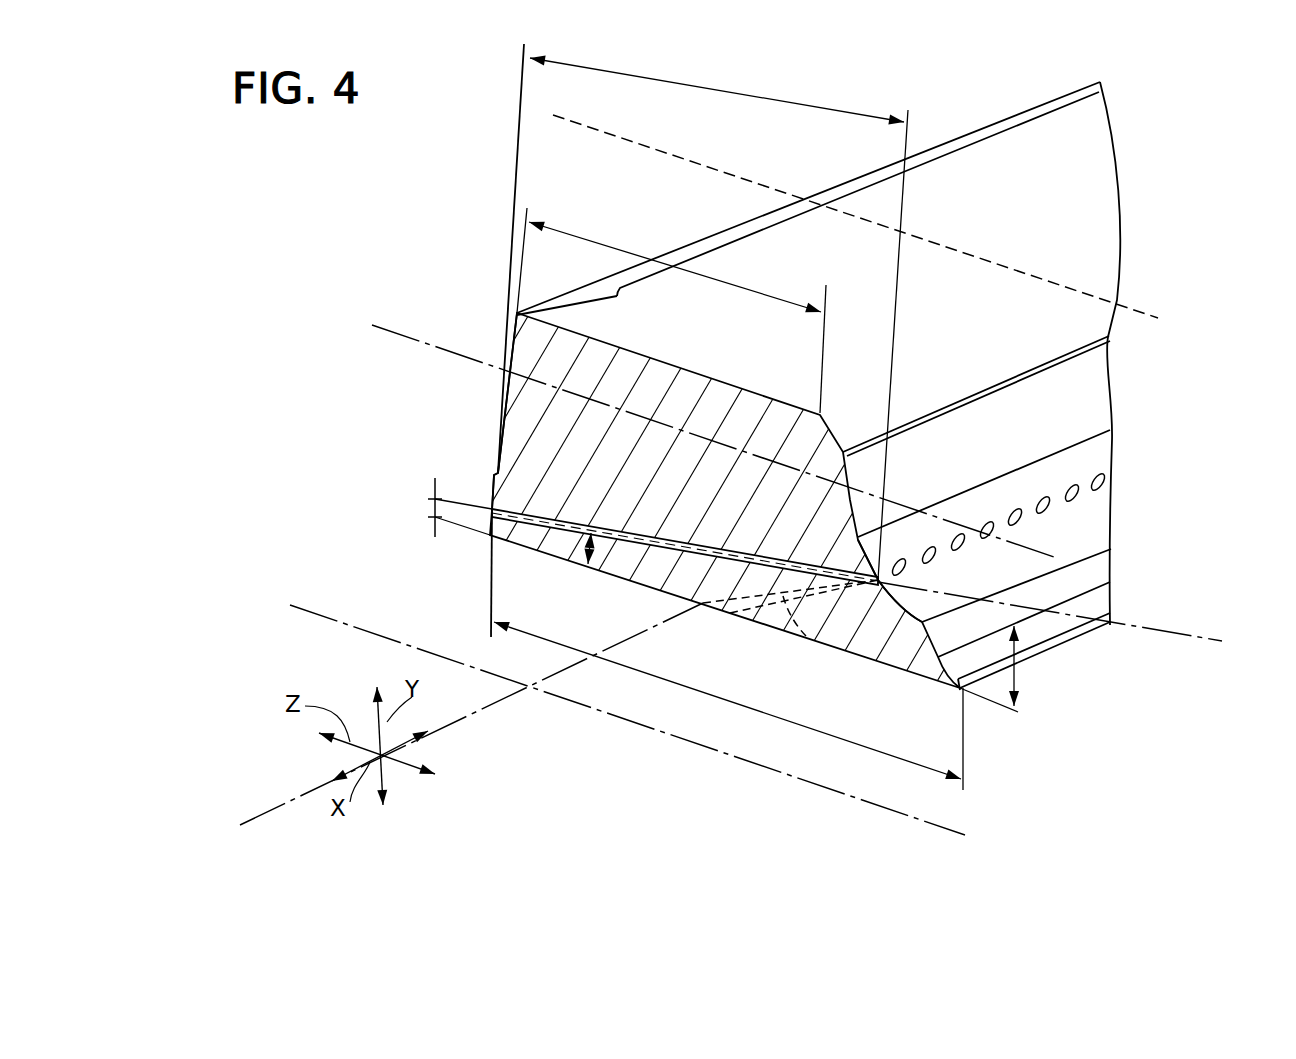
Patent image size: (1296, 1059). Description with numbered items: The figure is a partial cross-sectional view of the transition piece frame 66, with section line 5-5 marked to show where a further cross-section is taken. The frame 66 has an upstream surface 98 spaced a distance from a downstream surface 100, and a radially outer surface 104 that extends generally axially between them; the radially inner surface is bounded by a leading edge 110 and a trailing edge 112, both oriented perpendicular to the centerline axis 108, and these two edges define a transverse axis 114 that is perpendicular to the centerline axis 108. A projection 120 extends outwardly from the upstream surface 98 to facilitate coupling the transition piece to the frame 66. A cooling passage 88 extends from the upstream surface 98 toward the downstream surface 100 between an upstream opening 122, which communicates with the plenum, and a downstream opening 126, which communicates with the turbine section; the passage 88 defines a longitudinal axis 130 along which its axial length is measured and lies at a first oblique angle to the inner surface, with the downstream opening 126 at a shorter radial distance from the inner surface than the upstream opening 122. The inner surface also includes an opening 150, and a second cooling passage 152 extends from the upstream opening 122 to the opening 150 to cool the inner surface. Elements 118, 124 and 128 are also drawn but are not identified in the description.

The transition piece frame 66 is at (495, 184).
The cooling passage 88 is at (670, 548).
The upstream surface 98 is at (1092, 412).
The downstream surface 100 is at (508, 358).
The radially outer surface 104 is at (880, 210).
The centerline axis 108 is at (975, 828).
The leading edge 110 is at (1087, 633).
The trailing edge 112 is at (490, 540).
The transverse axis 114 is at (512, 700).
The top edge 118 is at (962, 185).
The projection 120 is at (1043, 648).
The upstream opening 122 is at (1078, 489).
The corner 124 is at (873, 590).
The downstream opening 126 is at (496, 476).
The rake land thickness 128 is at (516, 524).
The longitudinal axis 130 is at (1162, 630).
The opening 150 is at (720, 611).
The cooling passage 152 is at (806, 640).
The section line 5- 5 is at (563, 203).